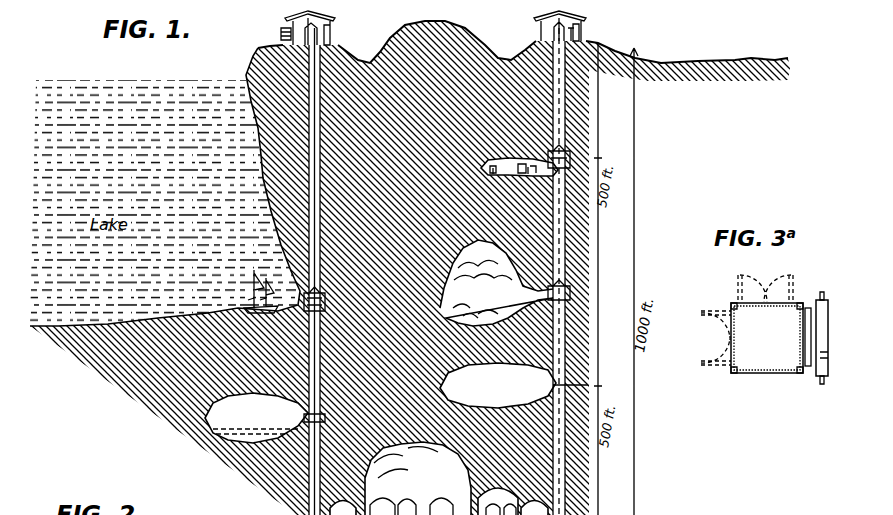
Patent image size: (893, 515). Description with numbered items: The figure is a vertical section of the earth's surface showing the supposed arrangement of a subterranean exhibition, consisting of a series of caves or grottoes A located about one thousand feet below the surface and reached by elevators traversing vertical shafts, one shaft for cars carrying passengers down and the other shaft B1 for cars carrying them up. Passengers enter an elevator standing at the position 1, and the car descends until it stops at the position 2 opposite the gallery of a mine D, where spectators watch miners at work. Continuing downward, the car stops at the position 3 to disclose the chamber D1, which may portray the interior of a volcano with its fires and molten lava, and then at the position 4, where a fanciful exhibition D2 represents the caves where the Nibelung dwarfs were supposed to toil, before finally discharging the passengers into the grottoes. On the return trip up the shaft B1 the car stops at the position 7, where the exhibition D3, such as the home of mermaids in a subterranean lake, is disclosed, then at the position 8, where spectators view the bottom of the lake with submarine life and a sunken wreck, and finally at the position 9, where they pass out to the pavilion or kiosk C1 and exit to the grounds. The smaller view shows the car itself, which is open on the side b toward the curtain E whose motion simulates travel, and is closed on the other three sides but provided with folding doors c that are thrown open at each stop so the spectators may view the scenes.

In FIG. 1, the elevator starting position 1 is at (546, 26).
In FIG. 1, the discharge position 9 is at (310, 28).
In FIG. 1, the lake-bottom viewing position 8 is at (317, 292).
In FIG. 1, the ascending-car stop position 7 is at (317, 410).
In FIG. 1, the mine-level stop position 2 is at (562, 150).
In FIG. 1, the volcano-level stop position 3 is at (562, 285).
In FIG. 1, the Nibelung-level stop position 4 is at (576, 384).
In FIG. 1, the ascending shaft B1 is at (300, 386).
In FIG. 1, the exit pavilion C1 is at (443, 31).
In FIG. 1, the mine D is at (512, 145).
In FIG. 1, the volcano chamber D1 is at (447, 264).
In FIG. 1, the Nibelung caves exhibition D2 is at (442, 360).
In FIG. 1, the mermaid home exhibition D3 is at (216, 388).
In FIG. 1, the caves or grottoes A is at (439, 478).
In FIG. 3a, the open side of car b is at (803, 312).
In FIG. 3a, the curtain E is at (814, 347).
In FIG. 3a, the doors c is at (726, 320).